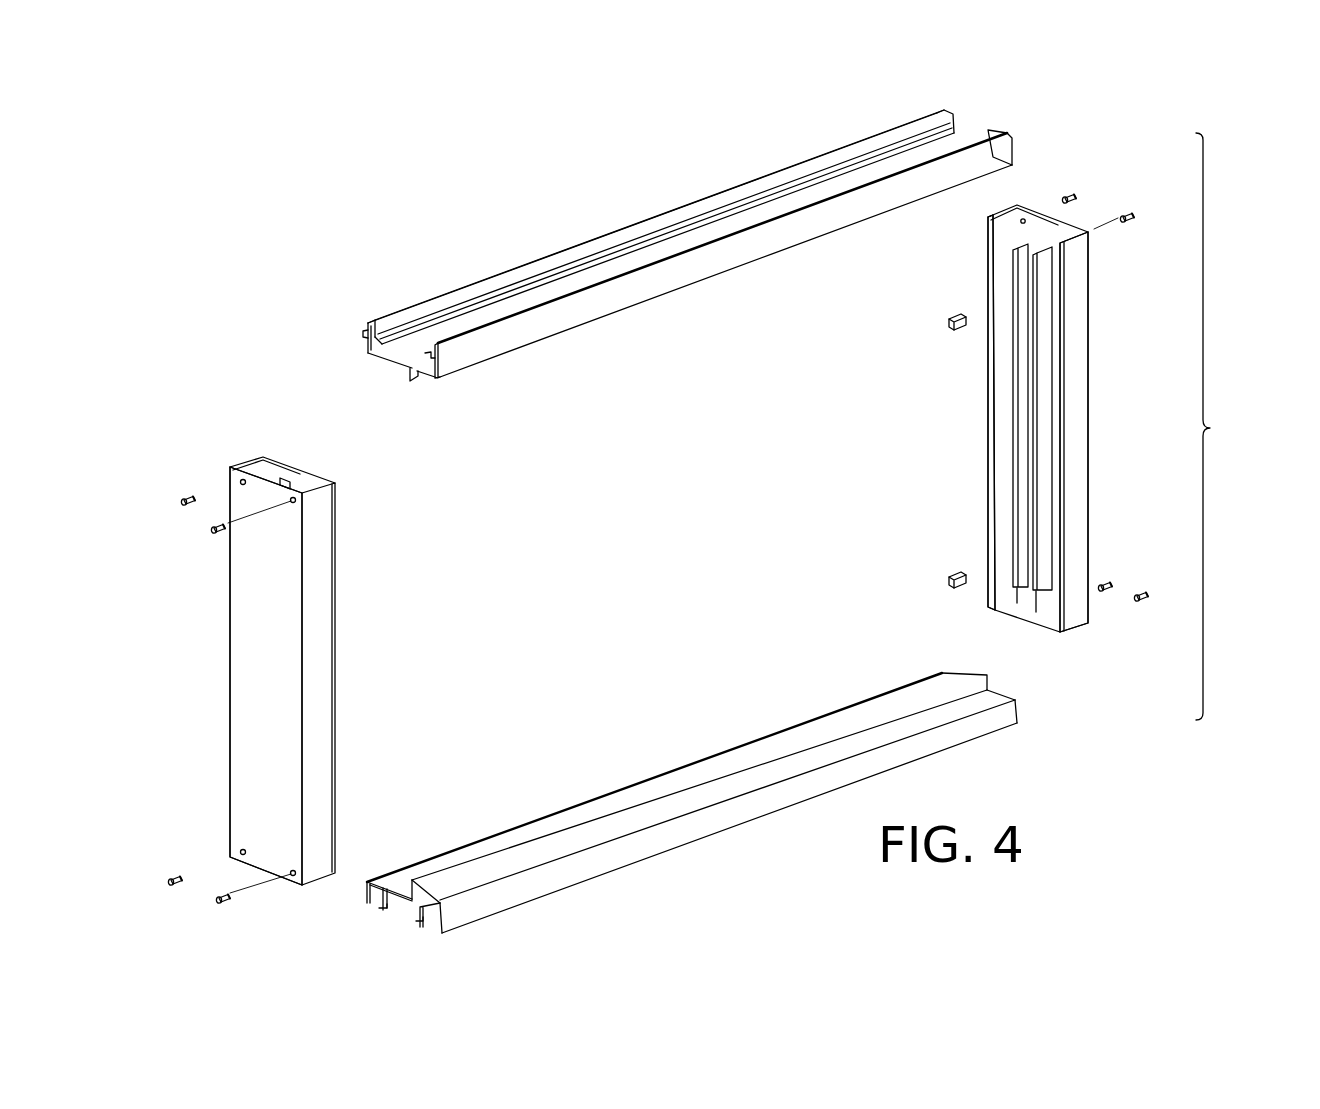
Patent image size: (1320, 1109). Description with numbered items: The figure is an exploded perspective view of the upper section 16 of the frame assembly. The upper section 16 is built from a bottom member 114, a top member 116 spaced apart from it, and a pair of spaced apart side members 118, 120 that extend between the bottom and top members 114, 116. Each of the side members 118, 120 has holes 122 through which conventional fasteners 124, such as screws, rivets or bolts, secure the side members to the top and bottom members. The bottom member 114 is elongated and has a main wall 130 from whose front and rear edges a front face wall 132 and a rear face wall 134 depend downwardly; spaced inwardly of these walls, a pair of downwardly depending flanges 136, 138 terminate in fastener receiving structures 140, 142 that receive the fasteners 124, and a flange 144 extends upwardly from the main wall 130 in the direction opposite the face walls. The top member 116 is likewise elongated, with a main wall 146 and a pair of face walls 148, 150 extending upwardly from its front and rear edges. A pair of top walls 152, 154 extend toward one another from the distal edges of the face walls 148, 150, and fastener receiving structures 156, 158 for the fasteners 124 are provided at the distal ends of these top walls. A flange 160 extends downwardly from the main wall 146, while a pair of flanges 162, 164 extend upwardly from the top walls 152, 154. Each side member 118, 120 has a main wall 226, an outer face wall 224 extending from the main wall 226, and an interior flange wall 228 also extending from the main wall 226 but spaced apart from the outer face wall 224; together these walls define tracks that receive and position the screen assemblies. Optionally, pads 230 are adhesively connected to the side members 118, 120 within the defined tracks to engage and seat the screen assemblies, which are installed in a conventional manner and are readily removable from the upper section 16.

The upper section 16 is at (1223, 426).
The bottom member 114 is at (611, 805).
The top member 116 is at (698, 274).
The side member 118 is at (247, 593).
The side member 120 is at (1076, 384).
The holes 122 is at (240, 482).
The fasteners 124 is at (178, 498).
The main wall 130 is at (410, 877).
The front face wall 132 is at (520, 888).
The rear face wall 134 is at (366, 888).
The flange 136 is at (366, 896).
The flange 138 is at (419, 924).
The fastener receiving structure 140 is at (420, 922).
The fastener receiving structure 142 is at (378, 912).
The flange 144 is at (508, 836).
The main wall 146 is at (384, 360).
The face wall 148 is at (496, 348).
The face wall 150 is at (366, 338).
The top wall 152 is at (438, 362).
The top wall 154 is at (366, 345).
The fastener receiving structure 156 is at (431, 353).
The fastener receiving structure 158 is at (386, 334).
The flange 160 is at (407, 373).
The flange 162 is at (563, 303).
The flange 164 is at (645, 218).
The outer face wall 224 is at (325, 610).
The main wall 226 is at (240, 668).
The interior flange wall 228 is at (288, 480).
The pads 230 is at (940, 322).